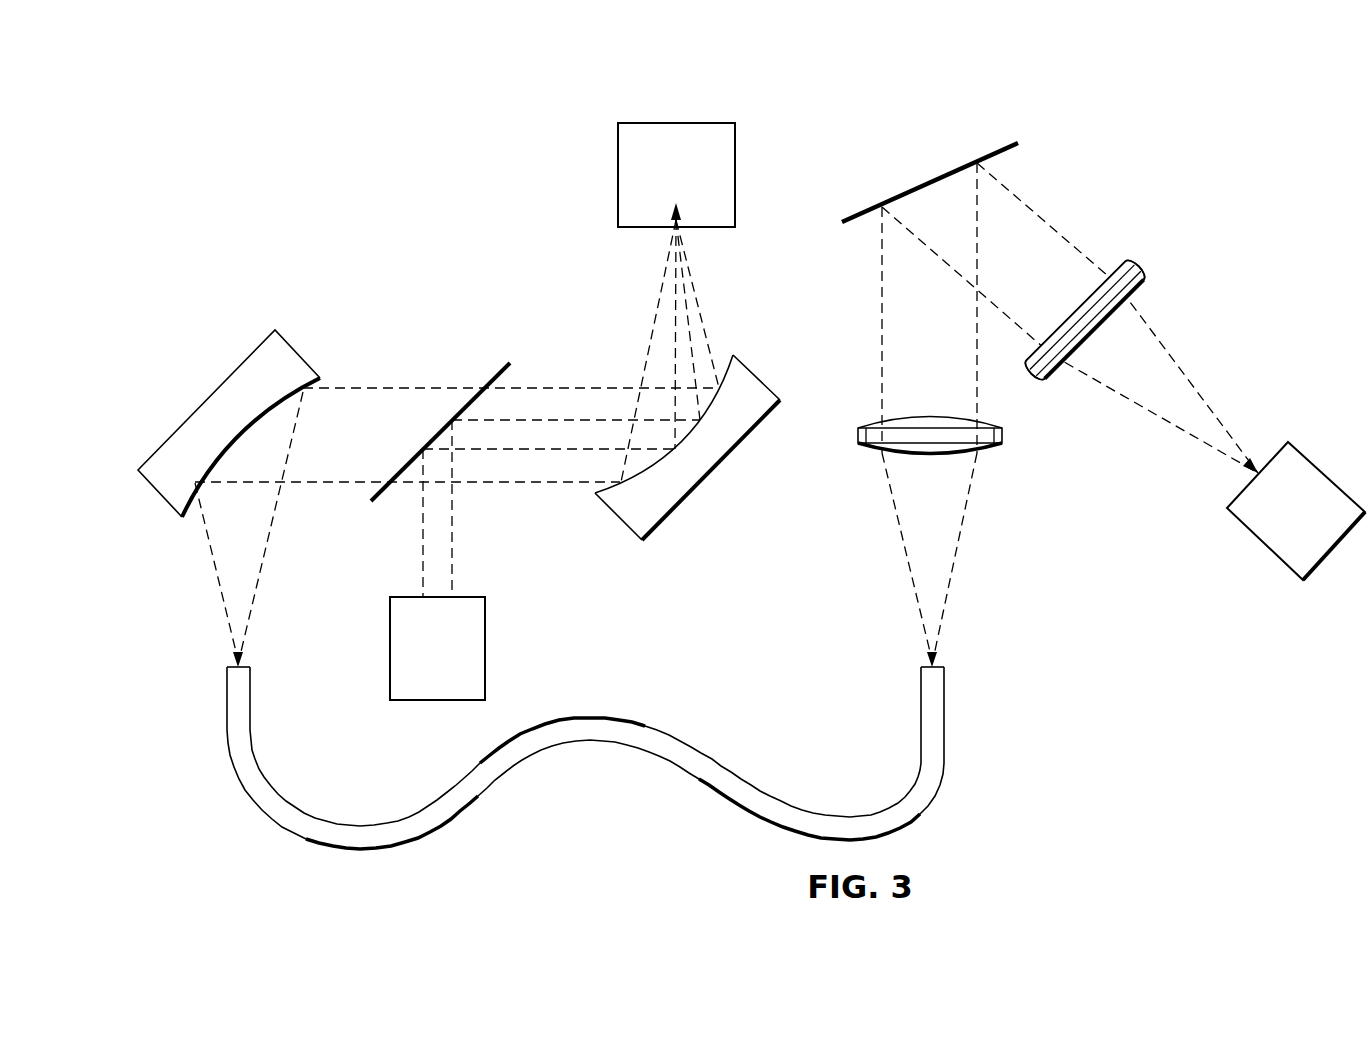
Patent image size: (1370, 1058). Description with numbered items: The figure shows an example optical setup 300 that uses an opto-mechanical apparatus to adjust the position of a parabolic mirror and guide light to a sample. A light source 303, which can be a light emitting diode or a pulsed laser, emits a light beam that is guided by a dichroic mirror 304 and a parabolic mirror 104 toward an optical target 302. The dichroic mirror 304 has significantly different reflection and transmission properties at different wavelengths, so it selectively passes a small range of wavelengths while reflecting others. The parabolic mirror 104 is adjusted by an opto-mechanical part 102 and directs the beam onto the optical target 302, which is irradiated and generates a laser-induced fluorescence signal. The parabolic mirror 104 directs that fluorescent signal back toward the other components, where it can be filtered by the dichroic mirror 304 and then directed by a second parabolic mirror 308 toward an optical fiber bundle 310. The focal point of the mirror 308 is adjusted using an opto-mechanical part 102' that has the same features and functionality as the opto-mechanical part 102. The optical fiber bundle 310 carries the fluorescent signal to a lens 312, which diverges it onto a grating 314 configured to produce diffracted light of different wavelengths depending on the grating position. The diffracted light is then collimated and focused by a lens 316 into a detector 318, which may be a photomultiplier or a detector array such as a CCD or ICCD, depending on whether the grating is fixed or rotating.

The optical setup 300 is at (408, 72).
The optical target 302 is at (618, 172).
The light source 303 is at (390, 647).
The dichroic mirror 304 is at (490, 373).
The parabolic mirror 308 is at (258, 418).
The opto-mechanical part 102 is at (687, 447).
The opto-mechanical part 102' is at (229, 423).
The parabolic mirror 104 is at (722, 354).
The optical fiber bundle 310 is at (358, 852).
The lens 312 is at (1003, 438).
The grating 314 is at (930, 180).
The lens 316 is at (1137, 268).
The detector 318 is at (1262, 547).